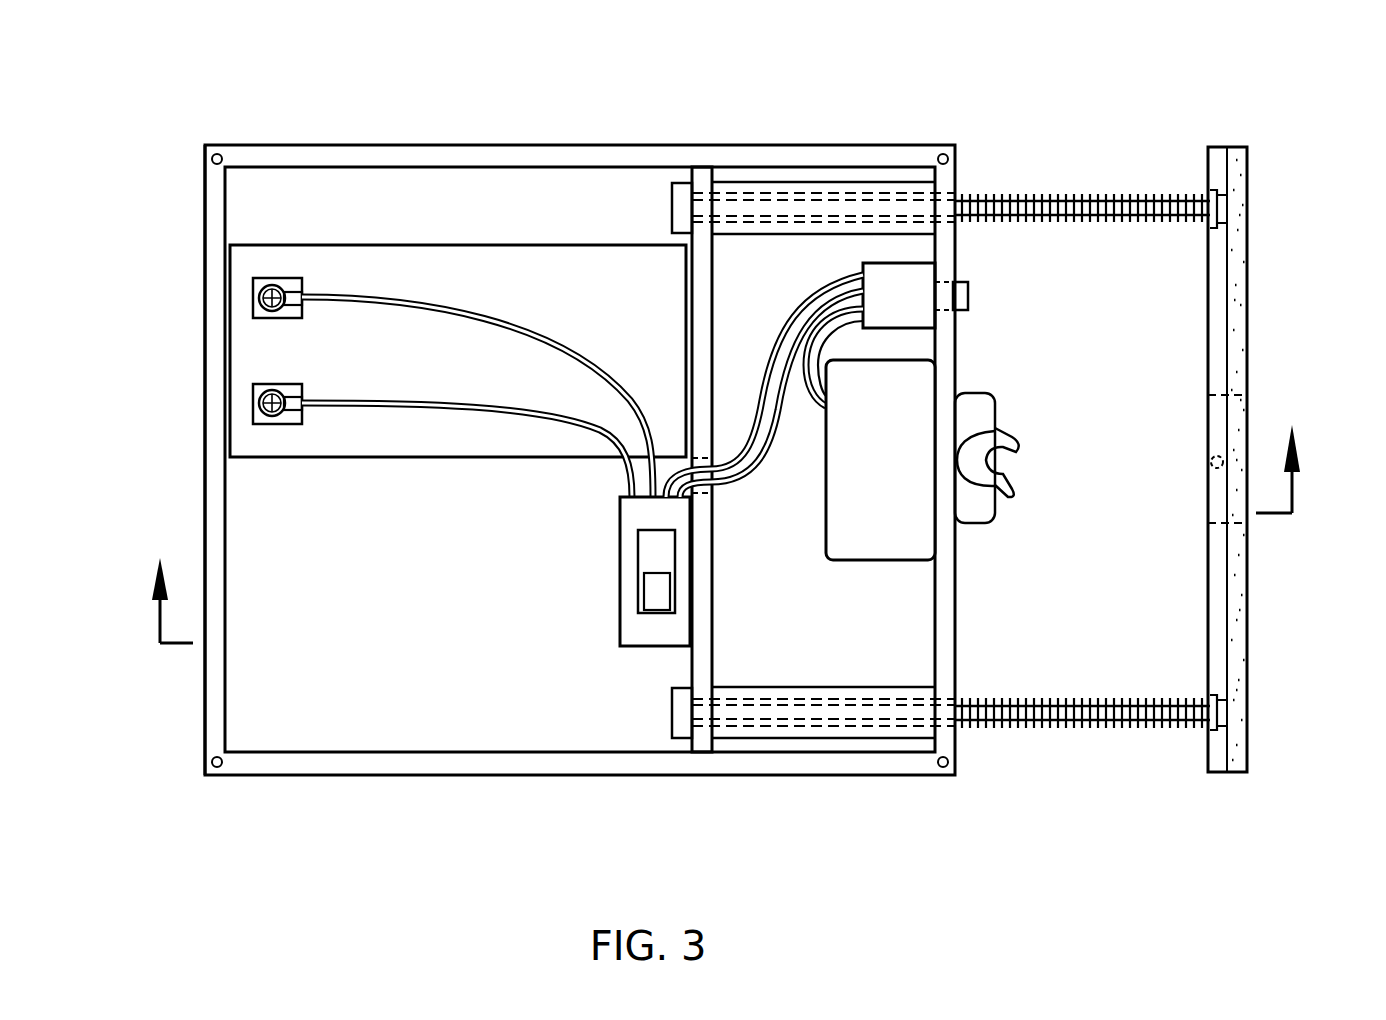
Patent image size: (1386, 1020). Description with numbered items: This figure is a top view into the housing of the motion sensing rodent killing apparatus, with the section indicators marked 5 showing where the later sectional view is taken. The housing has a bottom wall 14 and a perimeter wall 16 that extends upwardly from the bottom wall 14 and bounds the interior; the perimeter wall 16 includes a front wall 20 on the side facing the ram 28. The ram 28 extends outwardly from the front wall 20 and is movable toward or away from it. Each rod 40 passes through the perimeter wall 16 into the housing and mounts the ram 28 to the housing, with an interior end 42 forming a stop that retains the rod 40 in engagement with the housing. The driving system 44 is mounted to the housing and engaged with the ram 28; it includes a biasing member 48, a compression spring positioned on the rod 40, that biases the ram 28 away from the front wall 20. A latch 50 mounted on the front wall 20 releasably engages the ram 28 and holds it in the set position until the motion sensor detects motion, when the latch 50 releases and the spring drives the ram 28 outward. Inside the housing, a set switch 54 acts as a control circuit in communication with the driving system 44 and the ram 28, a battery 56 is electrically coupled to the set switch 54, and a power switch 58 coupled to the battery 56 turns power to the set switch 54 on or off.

The bottom wall 14 is at (315, 680).
The perimeter wall 16 is at (205, 773).
The front wall 20 is at (955, 247).
The ram 28 is at (1186, 815).
The rod 40 is at (1088, 207).
The interior end 42 is at (680, 713).
The driving system 44 is at (1040, 452).
The biasing member 48 is at (1135, 197).
The latch 50 is at (1001, 497).
The set switch 54 is at (897, 285).
The battery 56 is at (510, 273).
The power switch 58 is at (652, 595).
The section view indicator 5 is at (725, 521).